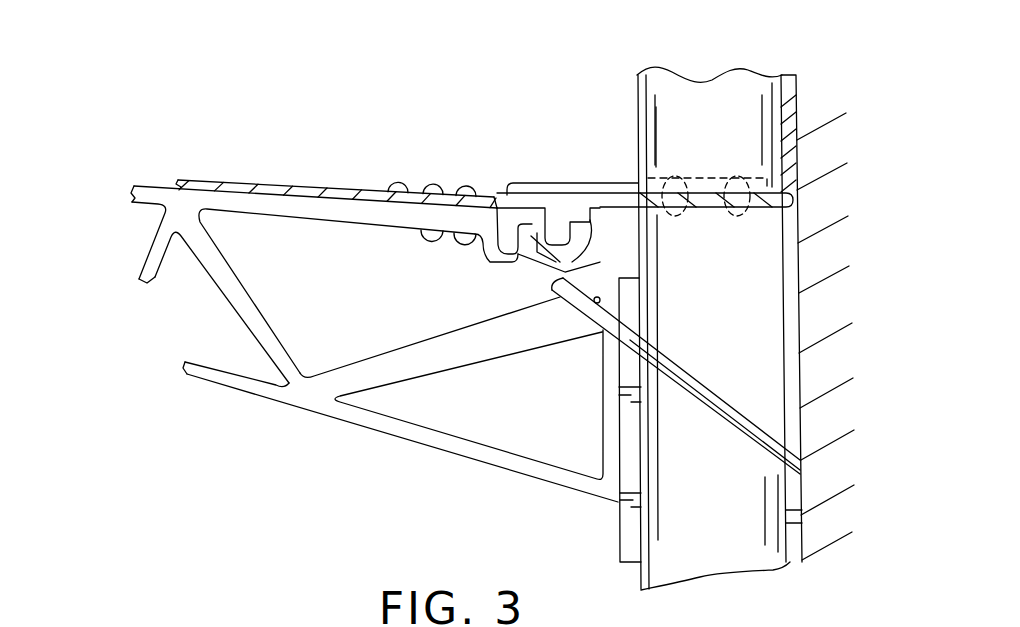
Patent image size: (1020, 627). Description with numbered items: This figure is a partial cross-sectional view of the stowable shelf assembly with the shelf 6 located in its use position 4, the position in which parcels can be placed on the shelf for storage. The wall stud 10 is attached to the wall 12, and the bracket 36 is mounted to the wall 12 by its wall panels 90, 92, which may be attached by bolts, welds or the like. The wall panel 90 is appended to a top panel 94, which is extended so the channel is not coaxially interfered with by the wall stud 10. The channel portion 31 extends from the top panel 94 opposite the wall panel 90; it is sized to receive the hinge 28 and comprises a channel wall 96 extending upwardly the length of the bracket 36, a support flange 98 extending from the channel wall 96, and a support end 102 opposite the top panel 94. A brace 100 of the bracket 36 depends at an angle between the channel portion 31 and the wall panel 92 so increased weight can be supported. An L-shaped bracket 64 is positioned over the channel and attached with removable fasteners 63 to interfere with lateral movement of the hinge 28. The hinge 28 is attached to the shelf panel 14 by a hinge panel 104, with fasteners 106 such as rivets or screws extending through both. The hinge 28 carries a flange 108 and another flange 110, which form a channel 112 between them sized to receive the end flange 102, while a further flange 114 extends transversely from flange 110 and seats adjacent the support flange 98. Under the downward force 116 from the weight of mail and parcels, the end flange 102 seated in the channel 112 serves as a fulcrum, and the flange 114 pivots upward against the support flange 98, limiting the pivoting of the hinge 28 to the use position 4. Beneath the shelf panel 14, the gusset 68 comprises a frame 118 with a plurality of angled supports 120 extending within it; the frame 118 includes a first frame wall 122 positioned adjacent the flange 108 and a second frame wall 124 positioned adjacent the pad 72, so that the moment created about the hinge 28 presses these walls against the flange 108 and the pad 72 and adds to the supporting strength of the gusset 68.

The use position 4 is at (473, 42).
The shelf 6 is at (102, 242).
The wall stud 10 is at (633, 110).
The wall 12 is at (800, 268).
The shelf panel 14 is at (290, 189).
The hinge 28 is at (490, 190).
The channel portion 31 is at (560, 204).
The bracket 36 is at (712, 390).
The fasteners 63 is at (675, 168).
The L-shaped bracket 64 is at (597, 183).
The gusset 68 is at (334, 416).
The pad 72 is at (625, 527).
The wall panel 90 is at (773, 133).
The wall panel 92 is at (785, 500).
The top panel 94 is at (707, 177).
The channel wall 96 is at (540, 235).
The support flange 98 is at (582, 227).
The brace 100 is at (725, 427).
The support end 102 is at (495, 256).
The hinge panel 104 is at (403, 189).
The fasteners 106 is at (462, 184).
The flange 108 is at (437, 243).
The flange 110 is at (547, 252).
The channel 112 is at (538, 232).
The flange 114 is at (573, 265).
The force 116 is at (152, 96).
The frame 118 is at (470, 450).
The angled supports 120 is at (213, 268).
The frame wall 122 is at (488, 250).
The frame wall 124 is at (607, 417).